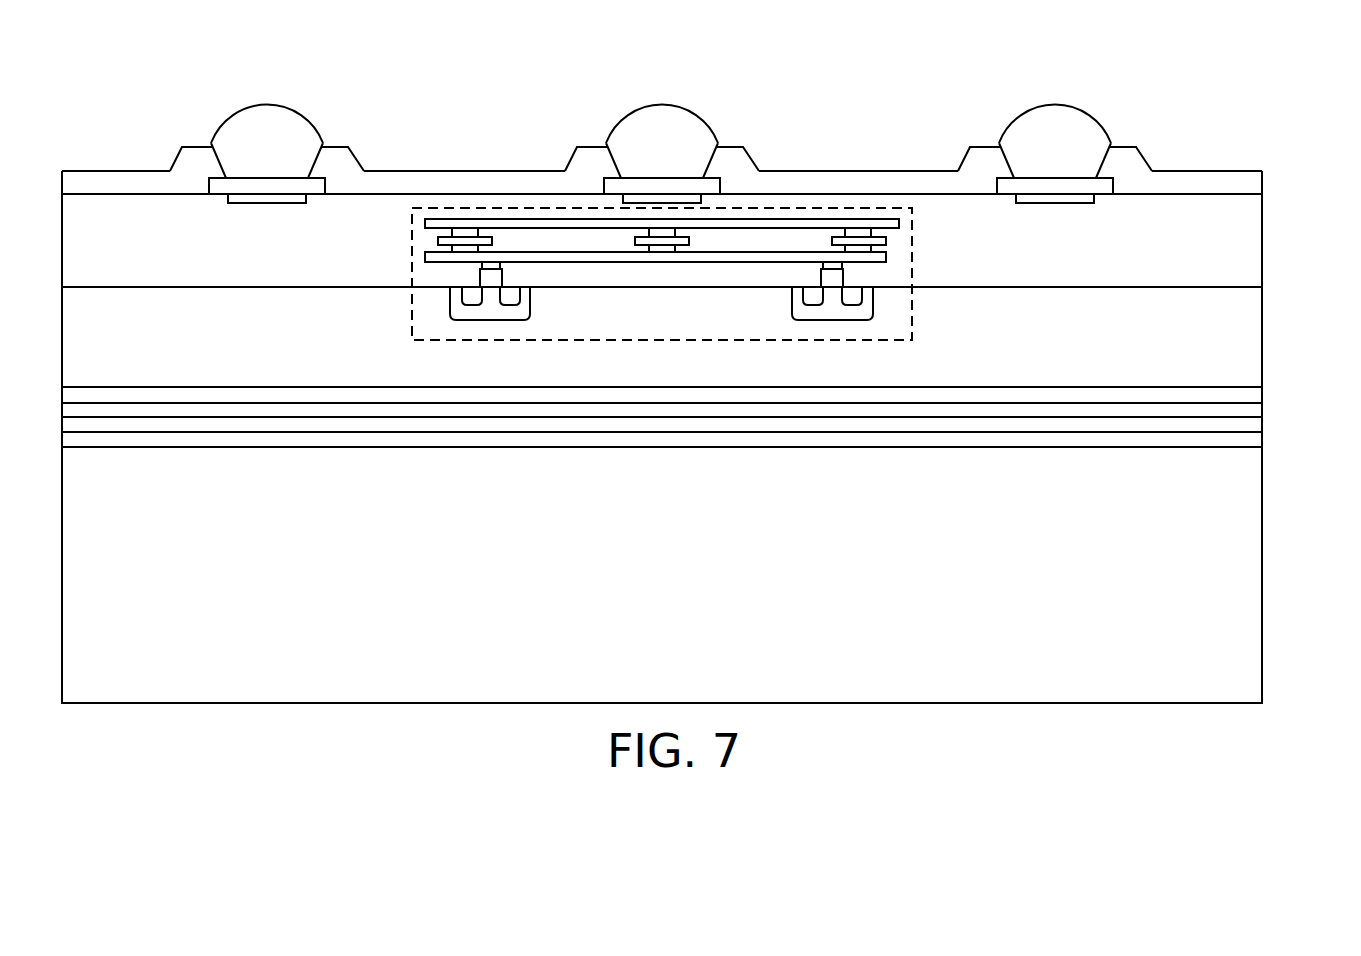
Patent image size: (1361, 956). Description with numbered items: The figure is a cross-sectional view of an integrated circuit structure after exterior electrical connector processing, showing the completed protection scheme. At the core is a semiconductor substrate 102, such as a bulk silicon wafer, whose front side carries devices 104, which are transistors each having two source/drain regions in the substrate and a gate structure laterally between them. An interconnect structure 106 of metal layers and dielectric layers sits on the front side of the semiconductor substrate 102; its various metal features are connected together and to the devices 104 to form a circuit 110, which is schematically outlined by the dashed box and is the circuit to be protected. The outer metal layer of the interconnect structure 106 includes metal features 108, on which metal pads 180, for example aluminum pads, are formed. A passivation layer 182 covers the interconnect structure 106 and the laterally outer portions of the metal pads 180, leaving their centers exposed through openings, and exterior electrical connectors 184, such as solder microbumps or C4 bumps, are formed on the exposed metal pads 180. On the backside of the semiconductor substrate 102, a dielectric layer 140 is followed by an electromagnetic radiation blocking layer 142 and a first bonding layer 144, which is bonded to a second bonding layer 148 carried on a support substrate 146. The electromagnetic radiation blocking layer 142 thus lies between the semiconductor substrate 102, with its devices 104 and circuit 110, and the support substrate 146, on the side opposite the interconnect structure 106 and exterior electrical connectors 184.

The semiconductor substrate 102 is at (1212, 345).
The devices 104 is at (550, 328).
The interconnect structure 106 is at (1255, 242).
The metal features 108 is at (267, 203).
The circuit 110 is at (913, 320).
The dielectric layer 140 is at (1262, 393).
The electromagnetic radiation blocking layer 142 is at (1262, 405).
The first bonding layer 144 is at (1262, 423).
The support substrate 146 is at (1212, 677).
The second bonding layer 148 is at (1262, 437).
The metal pads 180 is at (325, 186).
The passivation layer 182 is at (1255, 185).
The exterior electrical connectors 184 is at (247, 155).